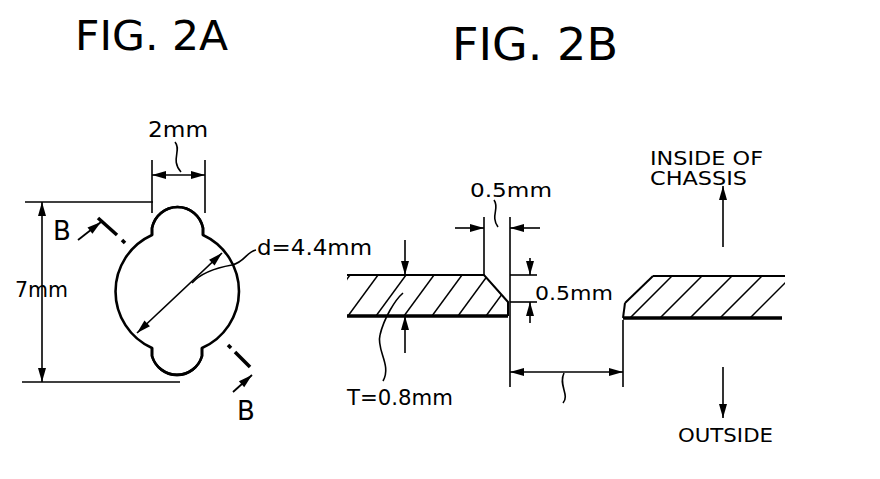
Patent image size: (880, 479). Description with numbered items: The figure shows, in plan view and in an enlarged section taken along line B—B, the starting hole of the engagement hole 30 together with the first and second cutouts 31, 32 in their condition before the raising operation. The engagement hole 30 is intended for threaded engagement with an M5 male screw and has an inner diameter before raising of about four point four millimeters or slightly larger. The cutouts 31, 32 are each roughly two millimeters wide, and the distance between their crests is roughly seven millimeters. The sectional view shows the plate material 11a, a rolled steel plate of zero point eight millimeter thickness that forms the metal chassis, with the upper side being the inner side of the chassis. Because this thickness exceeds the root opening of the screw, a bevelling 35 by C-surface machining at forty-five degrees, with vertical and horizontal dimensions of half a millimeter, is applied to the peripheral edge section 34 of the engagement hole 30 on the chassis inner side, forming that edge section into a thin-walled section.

In FIG. 2A, the engagement hole 30 is at (236, 319).
In FIG. 2B, the engagement hole 30 is at (571, 321).
In FIG. 2A, the first cutout 31 is at (186, 227).
In FIG. 2A, the second cutout 32 is at (180, 363).
In FIG. 2B, the peripheral edge section 34 is at (620, 315).
In FIG. 2B, the bevelling 35 is at (637, 287).
In FIG. 2B, the plate material 11a is at (745, 308).